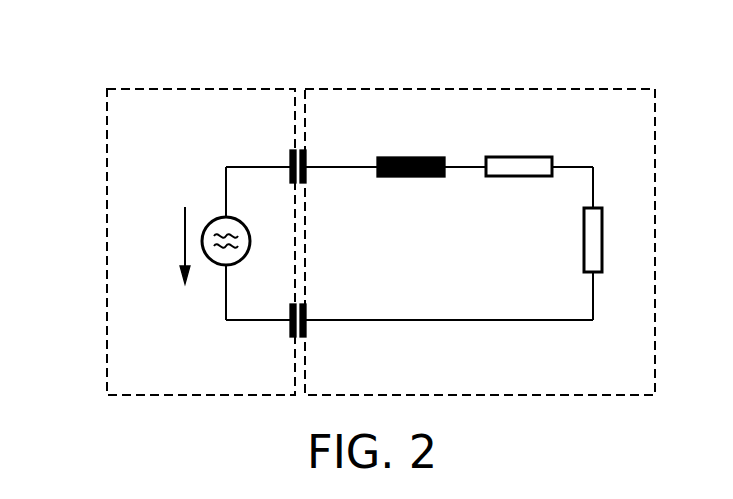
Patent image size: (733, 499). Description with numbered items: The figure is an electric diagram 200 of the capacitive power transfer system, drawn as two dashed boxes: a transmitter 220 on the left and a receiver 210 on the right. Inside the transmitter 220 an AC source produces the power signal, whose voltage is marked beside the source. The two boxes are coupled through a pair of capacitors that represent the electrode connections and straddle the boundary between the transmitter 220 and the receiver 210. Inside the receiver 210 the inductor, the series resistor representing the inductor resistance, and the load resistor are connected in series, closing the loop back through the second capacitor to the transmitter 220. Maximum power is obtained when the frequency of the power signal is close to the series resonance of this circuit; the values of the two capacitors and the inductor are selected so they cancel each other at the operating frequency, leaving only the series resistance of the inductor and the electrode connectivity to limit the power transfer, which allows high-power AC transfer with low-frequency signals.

The electric diagram 200 is at (80, 79).
The transmitter 220 is at (107, 242).
The receiver 210 is at (655, 242).